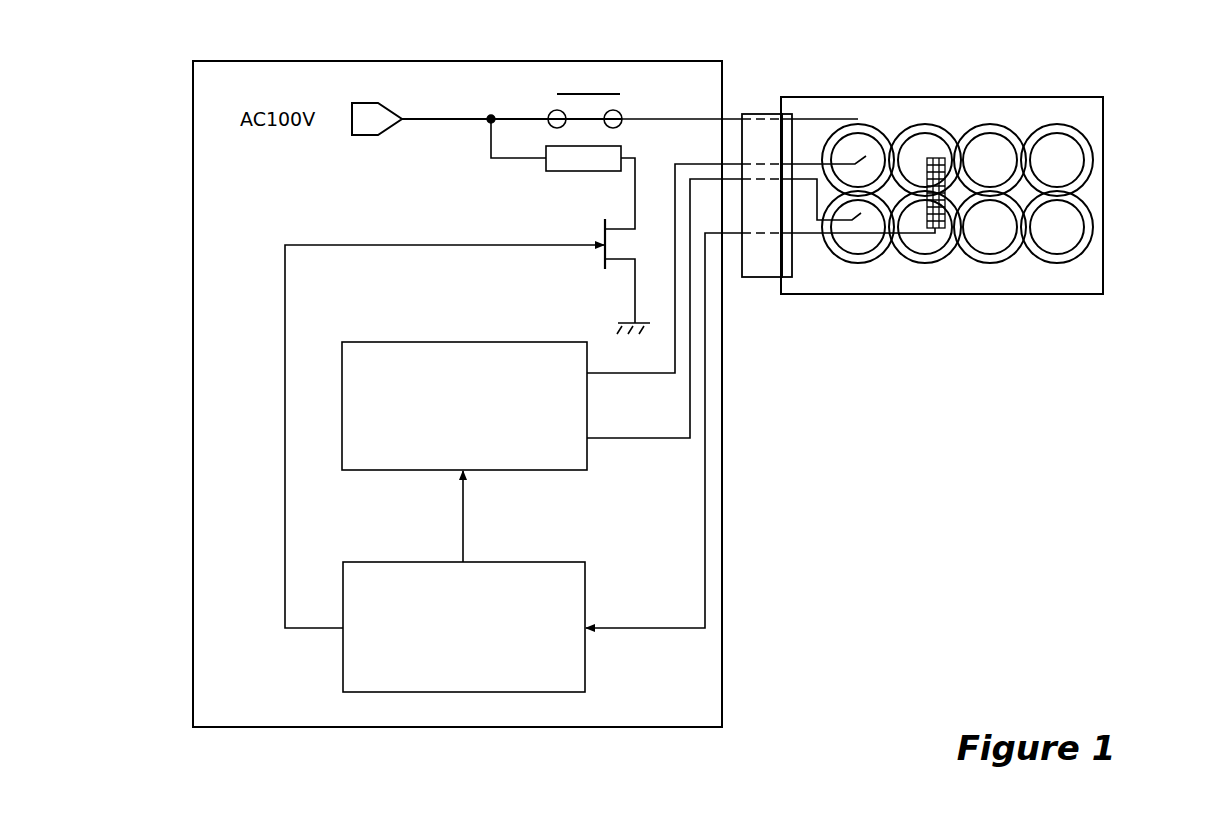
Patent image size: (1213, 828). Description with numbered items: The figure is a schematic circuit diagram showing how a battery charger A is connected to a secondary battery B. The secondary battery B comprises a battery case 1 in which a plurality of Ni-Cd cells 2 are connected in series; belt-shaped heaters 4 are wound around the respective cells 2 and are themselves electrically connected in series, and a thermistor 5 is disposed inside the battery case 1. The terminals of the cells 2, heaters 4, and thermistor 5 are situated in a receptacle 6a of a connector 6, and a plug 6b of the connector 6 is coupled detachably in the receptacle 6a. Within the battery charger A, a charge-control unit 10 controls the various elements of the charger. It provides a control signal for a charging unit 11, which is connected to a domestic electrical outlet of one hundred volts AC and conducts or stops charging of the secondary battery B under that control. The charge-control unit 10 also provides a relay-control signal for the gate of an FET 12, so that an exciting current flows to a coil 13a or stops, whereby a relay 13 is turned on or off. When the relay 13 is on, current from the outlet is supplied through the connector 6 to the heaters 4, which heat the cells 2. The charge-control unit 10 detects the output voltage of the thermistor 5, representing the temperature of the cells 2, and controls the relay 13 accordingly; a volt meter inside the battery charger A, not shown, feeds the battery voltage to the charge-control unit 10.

The battery case 1 is at (985, 294).
The Ni-Cd cells 2 is at (978, 140).
The belt-shaped heaters 4 is at (902, 130).
The thermistor 5 is at (947, 183).
The connector 6 is at (792, 277).
The receptacle 6a is at (790, 270).
The plug 6b is at (762, 278).
The charge-control unit 10 is at (396, 562).
The charging unit 11 is at (390, 342).
The FET 12 is at (580, 262).
The relay 13 is at (642, 99).
The coil 13a is at (570, 162).
The battery charger A is at (722, 655).
The secondary battery B is at (1104, 273).